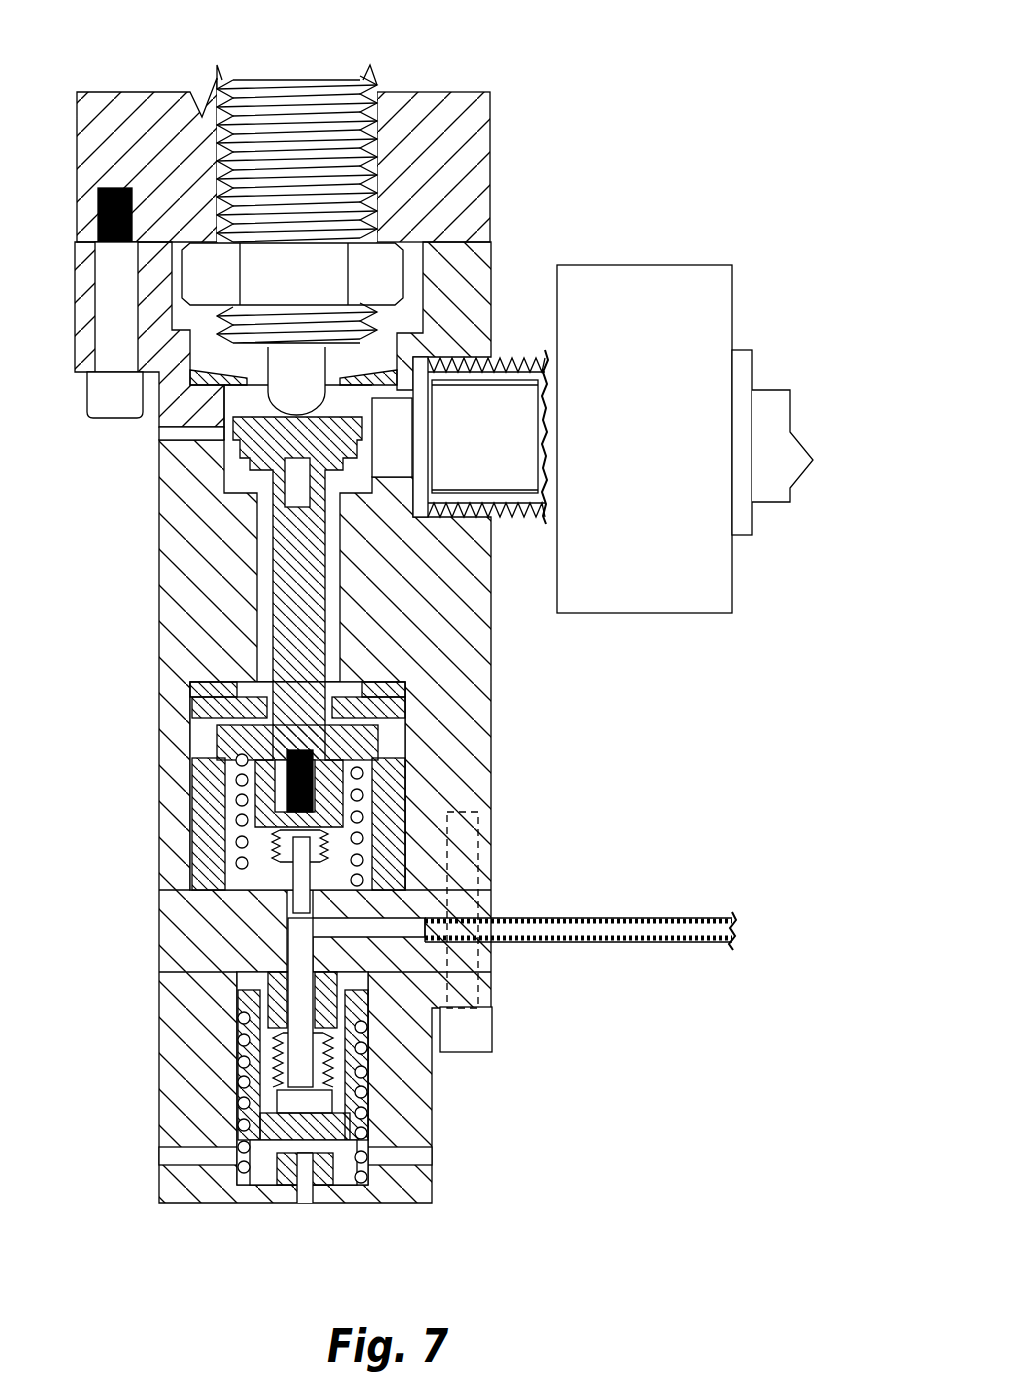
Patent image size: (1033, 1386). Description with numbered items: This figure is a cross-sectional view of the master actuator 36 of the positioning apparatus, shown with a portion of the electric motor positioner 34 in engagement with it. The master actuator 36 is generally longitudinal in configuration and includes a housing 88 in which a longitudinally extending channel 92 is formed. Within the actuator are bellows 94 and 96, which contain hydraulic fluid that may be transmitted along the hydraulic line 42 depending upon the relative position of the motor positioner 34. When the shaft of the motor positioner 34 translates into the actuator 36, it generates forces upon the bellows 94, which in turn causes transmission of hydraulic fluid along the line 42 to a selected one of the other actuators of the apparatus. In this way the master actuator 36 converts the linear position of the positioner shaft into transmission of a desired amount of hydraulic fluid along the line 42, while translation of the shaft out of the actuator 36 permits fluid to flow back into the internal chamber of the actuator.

The electric motor positioner 34 is at (292, 160).
The master actuator 36 is at (573, 147).
The hydraulic line 42 is at (576, 929).
The housing 88 is at (205, 572).
The channel 92 is at (335, 622).
The bellows 94 is at (328, 850).
The bellows 96 is at (280, 1058).